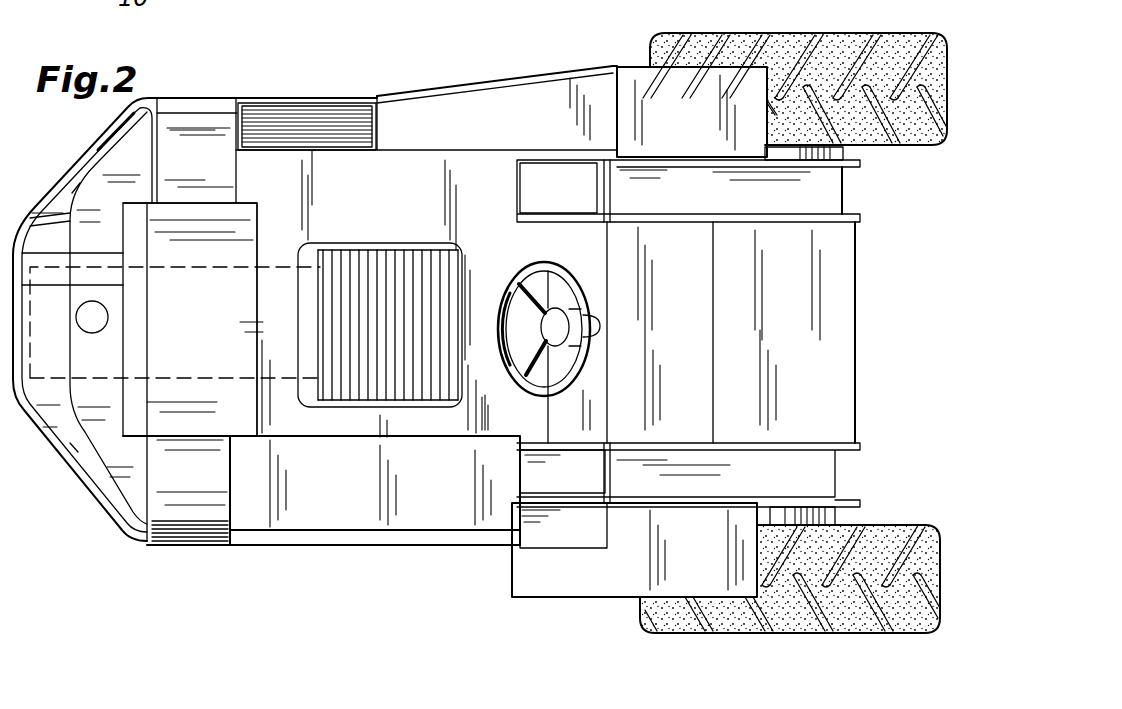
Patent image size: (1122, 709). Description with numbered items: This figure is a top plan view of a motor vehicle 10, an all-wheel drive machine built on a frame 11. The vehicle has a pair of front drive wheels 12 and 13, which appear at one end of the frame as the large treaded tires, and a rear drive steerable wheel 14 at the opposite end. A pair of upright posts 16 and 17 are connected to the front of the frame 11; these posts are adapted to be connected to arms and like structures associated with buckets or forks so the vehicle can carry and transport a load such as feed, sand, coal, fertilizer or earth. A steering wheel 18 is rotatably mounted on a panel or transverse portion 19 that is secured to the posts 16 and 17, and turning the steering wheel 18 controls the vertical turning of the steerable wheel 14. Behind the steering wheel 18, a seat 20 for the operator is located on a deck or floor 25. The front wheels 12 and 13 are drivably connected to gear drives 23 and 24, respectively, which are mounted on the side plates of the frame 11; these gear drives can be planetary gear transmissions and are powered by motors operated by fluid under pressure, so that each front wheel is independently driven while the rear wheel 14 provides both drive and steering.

The motor vehicle 10 is at (436, 328).
The frame 11 is at (362, 548).
The front drive wheel 12 is at (889, 528).
The front drive wheel 13 is at (889, 50).
The rear drive steerable wheel 14 is at (268, 262).
The upright post 16 is at (686, 443).
The upright post 17 is at (708, 224).
The steering wheel 18 is at (528, 270).
The panel or transverse portion 19 is at (574, 413).
The seat 20 is at (392, 258).
The gear drive 23 is at (812, 518).
The gear drive 24 is at (862, 158).
The deck or floor 25 is at (368, 188).